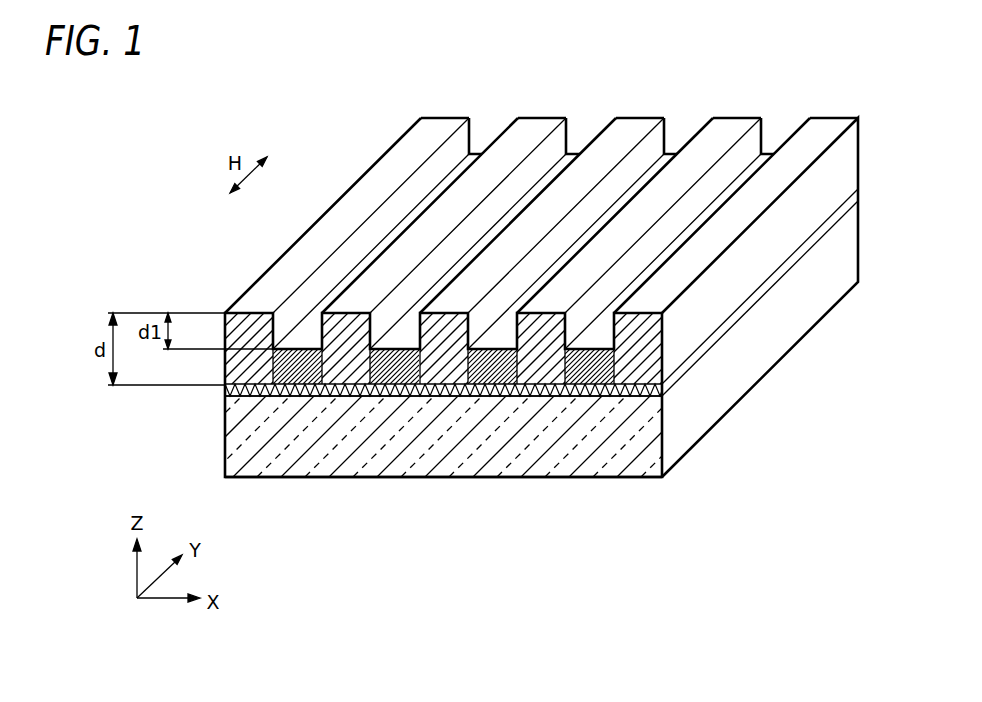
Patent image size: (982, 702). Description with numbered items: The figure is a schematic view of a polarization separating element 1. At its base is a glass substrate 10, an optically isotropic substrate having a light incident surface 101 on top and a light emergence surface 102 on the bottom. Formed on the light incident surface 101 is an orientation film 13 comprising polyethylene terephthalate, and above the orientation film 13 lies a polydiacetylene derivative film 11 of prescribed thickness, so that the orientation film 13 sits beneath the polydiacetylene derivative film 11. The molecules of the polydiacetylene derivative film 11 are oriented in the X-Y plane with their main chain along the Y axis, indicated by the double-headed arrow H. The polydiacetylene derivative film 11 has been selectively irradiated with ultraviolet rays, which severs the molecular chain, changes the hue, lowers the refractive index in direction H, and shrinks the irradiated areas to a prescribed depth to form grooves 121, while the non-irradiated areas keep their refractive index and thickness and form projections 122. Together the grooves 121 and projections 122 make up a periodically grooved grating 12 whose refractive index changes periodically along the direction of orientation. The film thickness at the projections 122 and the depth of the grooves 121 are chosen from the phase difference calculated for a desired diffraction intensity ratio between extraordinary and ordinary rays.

The polarization separating element 1 is at (363, 140).
The glass substrate 10 is at (867, 203).
The light incident surface 101 is at (663, 392).
The light emergence surface 102 is at (648, 478).
The polydiacetylene derivative film 11 is at (867, 118).
The periodically grooved grating 12 is at (418, 65).
The grooves 121 is at (773, 128).
The projections 122 is at (830, 124).
The orientation film 13 is at (867, 187).